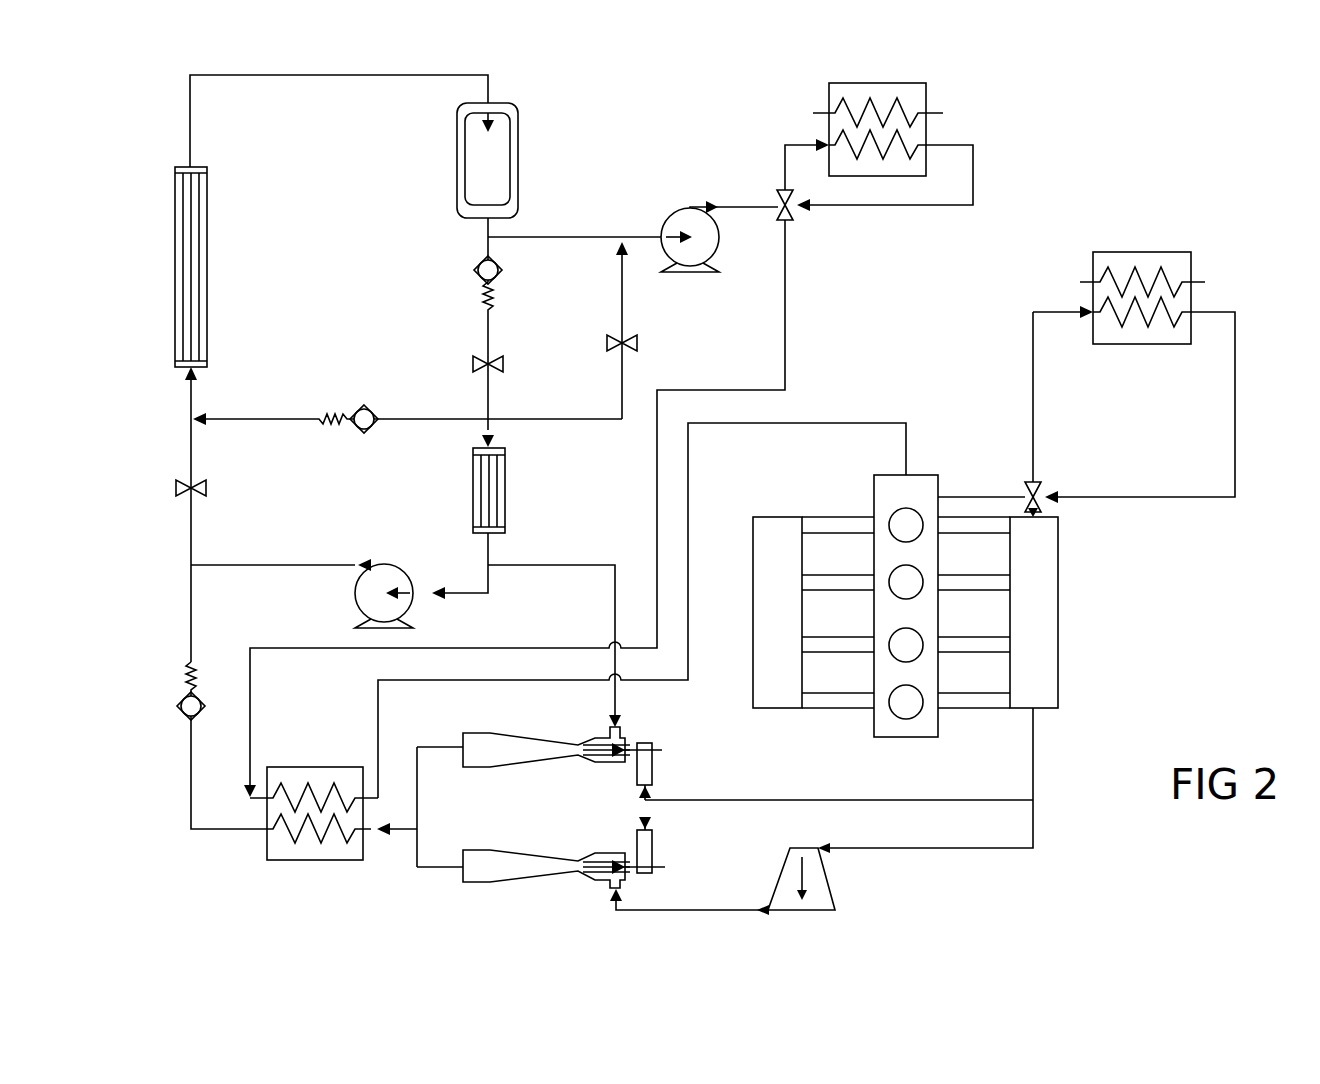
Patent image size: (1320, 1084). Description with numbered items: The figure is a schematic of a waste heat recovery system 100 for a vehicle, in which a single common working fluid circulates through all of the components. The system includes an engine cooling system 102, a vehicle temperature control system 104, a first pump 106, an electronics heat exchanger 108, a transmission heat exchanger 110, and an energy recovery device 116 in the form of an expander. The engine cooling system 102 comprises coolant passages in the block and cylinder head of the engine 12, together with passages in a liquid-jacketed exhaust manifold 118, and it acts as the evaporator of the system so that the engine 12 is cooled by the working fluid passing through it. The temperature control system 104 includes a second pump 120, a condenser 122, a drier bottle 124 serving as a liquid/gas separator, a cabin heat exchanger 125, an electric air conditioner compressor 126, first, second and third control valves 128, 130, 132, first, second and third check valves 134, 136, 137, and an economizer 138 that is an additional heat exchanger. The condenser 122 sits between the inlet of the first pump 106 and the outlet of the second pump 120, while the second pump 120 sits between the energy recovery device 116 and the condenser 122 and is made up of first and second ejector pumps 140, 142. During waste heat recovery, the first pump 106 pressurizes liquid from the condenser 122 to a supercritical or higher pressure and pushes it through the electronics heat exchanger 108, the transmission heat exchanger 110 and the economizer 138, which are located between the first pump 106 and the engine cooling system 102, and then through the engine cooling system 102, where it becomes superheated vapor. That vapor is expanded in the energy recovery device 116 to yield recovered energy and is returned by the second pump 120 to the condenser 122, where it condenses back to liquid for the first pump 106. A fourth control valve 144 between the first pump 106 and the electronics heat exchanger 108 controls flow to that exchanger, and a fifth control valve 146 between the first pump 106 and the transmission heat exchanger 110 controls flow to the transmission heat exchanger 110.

The engine 12 is at (958, 406).
The waste heat recovery system 100 is at (1112, 172).
The engine cooling system 102 is at (882, 396).
The vehicle temperature control system 104 is at (603, 133).
The first pump 106 is at (681, 210).
The electronics heat exchanger 108 is at (926, 100).
The transmission heat exchanger 110 is at (1172, 252).
The energy recovery device 116 is at (825, 866).
The liquid-jacketed exhaust manifold 118 is at (1060, 540).
The second pump 120 is at (708, 781).
The condenser 122 is at (207, 245).
The drier bottle 124 is at (518, 178).
The cabin heat exchanger 125 is at (508, 490).
The electric air conditioner compressor 126 is at (388, 565).
The first control valve 128 is at (505, 368).
The second control valve 130 is at (207, 492).
The third control valve 132 is at (640, 346).
The first check valve 134 is at (475, 268).
The second check valve 136 is at (376, 430).
The third check valve 137 is at (201, 700).
The economizer 138 is at (328, 767).
The first ejector pump 140 is at (523, 762).
The second ejector pump 142 is at (556, 860).
The fourth control valve 144 is at (792, 220).
The fifth control valve 146 is at (1038, 480).